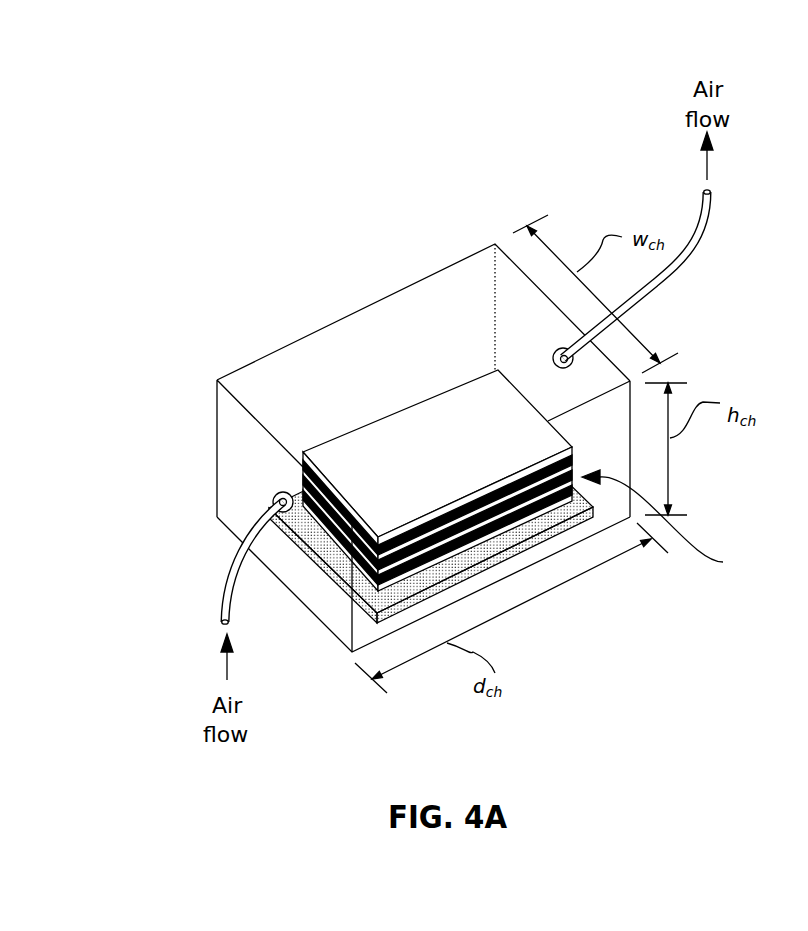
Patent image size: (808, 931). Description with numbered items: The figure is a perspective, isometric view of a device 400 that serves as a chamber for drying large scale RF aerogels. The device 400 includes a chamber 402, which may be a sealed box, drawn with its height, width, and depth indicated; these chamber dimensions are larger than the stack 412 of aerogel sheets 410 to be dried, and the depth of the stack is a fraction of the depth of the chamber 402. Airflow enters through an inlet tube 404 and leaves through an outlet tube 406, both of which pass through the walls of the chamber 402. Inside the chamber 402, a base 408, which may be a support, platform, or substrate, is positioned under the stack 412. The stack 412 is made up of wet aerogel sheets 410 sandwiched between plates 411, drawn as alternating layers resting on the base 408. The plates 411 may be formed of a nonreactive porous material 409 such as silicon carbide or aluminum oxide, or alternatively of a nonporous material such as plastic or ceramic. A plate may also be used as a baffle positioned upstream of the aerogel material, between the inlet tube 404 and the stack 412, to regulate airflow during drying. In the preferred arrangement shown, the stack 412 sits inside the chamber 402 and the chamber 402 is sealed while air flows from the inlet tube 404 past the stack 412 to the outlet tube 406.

The device 400 is at (339, 226).
The chamber 402 is at (262, 359).
The inlet tube 404 is at (232, 572).
The outlet tube 406 is at (640, 307).
The base 408 is at (540, 542).
The nonreactive porous material 409 is at (437, 453).
The aerogel sheets 410 is at (570, 462).
The plates 411 is at (302, 464).
The stack 412 is at (676, 523).